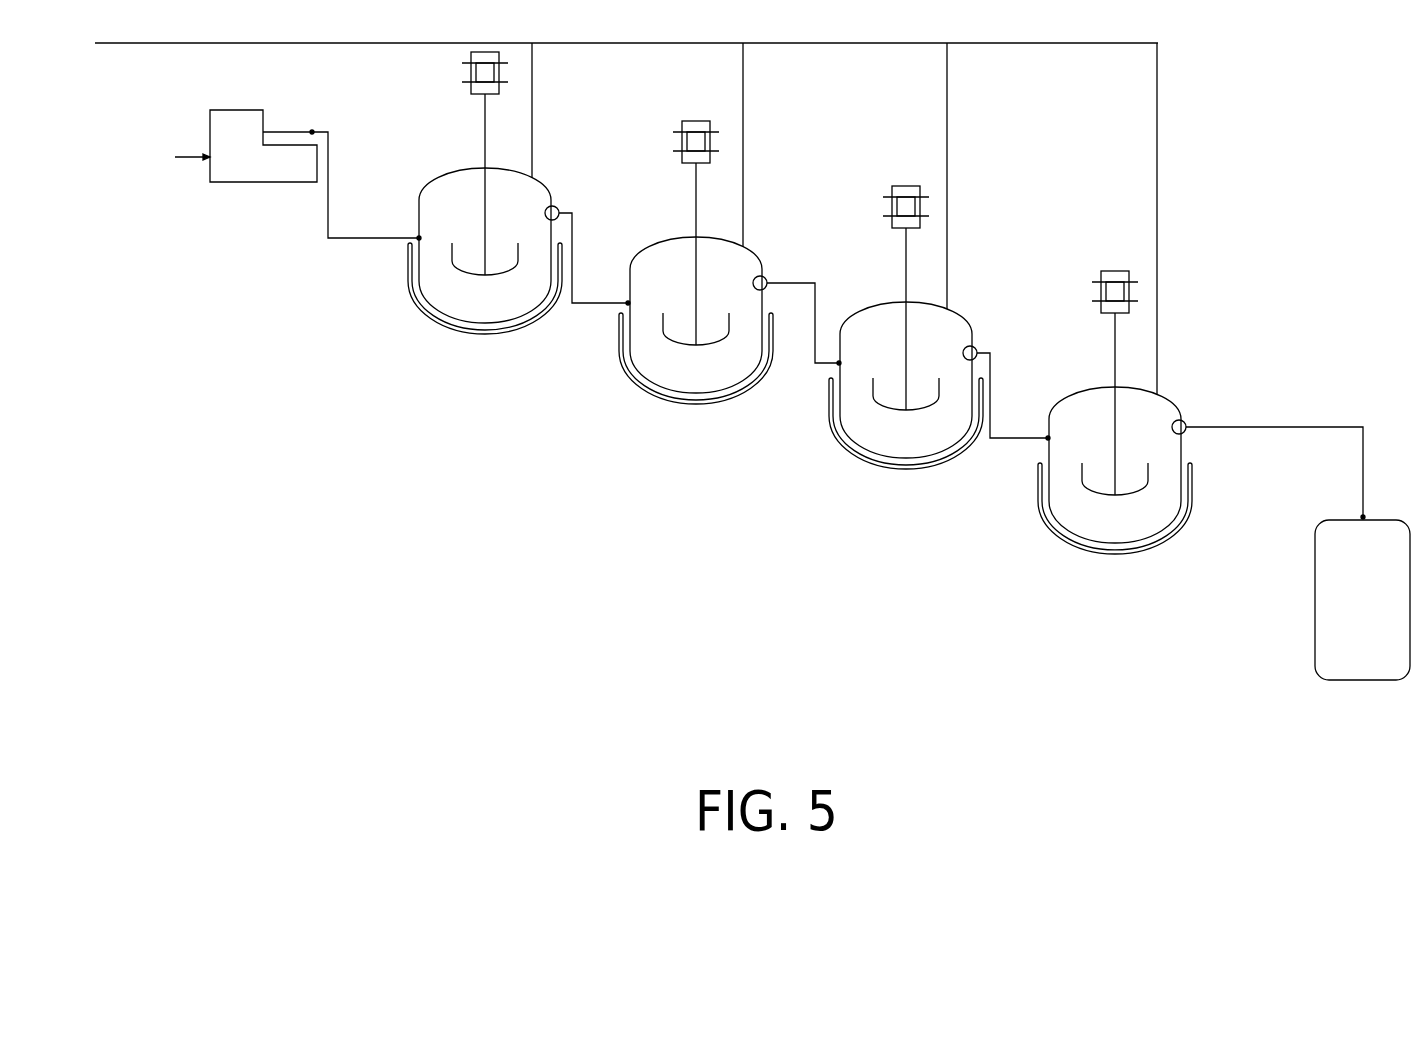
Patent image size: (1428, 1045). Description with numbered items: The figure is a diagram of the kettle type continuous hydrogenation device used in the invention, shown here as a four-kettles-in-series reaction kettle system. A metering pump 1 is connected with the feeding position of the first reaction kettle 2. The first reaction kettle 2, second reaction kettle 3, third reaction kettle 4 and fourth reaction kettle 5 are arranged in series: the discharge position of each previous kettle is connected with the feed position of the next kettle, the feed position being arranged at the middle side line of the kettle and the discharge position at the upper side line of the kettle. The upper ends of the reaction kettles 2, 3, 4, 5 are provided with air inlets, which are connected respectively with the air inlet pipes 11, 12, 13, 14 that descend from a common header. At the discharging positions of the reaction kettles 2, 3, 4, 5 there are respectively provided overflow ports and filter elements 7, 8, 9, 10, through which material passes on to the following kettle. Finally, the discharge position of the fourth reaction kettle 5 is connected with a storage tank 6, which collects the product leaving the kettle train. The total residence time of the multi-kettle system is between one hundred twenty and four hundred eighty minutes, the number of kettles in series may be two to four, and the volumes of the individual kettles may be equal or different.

The metering pump 1 is at (245, 187).
The first reaction kettle 2 is at (458, 335).
The second reaction kettle 3 is at (693, 407).
The third reaction kettle 4 is at (907, 470).
The fourth reaction kettle 5 is at (1118, 557).
The storage tank 6 is at (1372, 693).
The overflow port and filter element 7 is at (563, 207).
The overflow port and filter element 8 is at (767, 275).
The overflow port and filter element 9 is at (980, 343).
The overflow port and filter element 10 is at (1188, 415).
The air inlet pipe 11 is at (535, 82).
The air inlet pipe 12 is at (750, 92).
The air inlet pipe 13 is at (953, 102).
The air inlet pipe 14 is at (1162, 92).